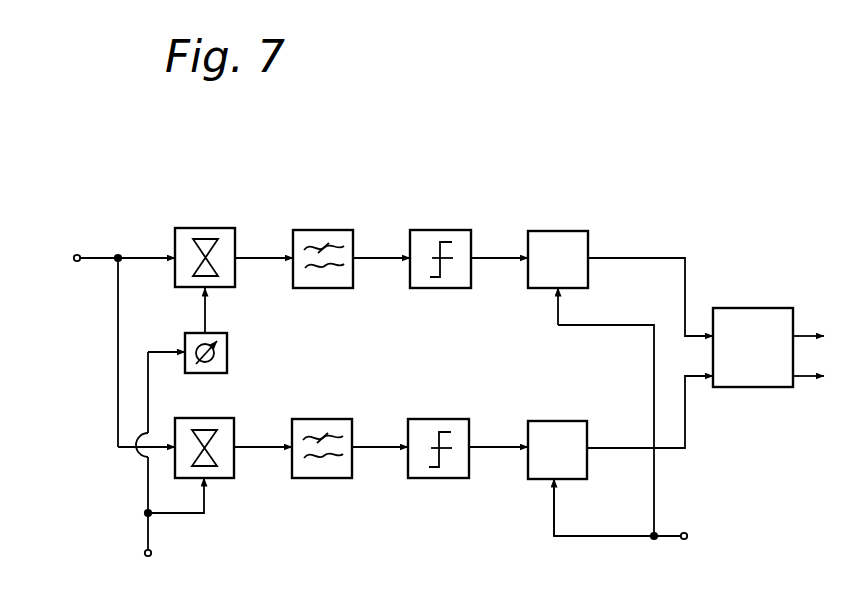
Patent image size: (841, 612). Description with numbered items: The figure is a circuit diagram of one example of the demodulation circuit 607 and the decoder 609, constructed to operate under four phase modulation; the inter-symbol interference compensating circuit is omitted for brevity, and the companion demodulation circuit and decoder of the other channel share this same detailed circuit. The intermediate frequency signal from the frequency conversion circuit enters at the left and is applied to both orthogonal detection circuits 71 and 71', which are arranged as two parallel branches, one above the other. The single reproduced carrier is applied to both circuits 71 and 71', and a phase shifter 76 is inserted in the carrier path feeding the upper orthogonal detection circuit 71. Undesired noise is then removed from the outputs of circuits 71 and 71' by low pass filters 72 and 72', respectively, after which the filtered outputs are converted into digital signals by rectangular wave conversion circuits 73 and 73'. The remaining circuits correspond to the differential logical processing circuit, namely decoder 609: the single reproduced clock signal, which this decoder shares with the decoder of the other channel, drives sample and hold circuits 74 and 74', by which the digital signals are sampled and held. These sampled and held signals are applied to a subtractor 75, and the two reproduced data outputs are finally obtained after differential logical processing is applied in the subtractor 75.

The demodulation circuit 607 is at (429, 151).
The decoder 609 is at (508, 151).
The orthogonal detection circuit 71 is at (205, 240).
The low pass filter 72 is at (323, 241).
The rectangular wave conversion circuit 73 is at (440, 241).
The sample and hold circuit 74 is at (558, 241).
The subtractor 75 is at (756, 308).
The phase shifter 76 is at (228, 352).
The orthogonal detection circuit 71' is at (204, 429).
The low pass filter 72' is at (322, 429).
The rectangular wave conversion circuit 73' is at (438, 429).
The sample and hold circuit 74' is at (557, 430).